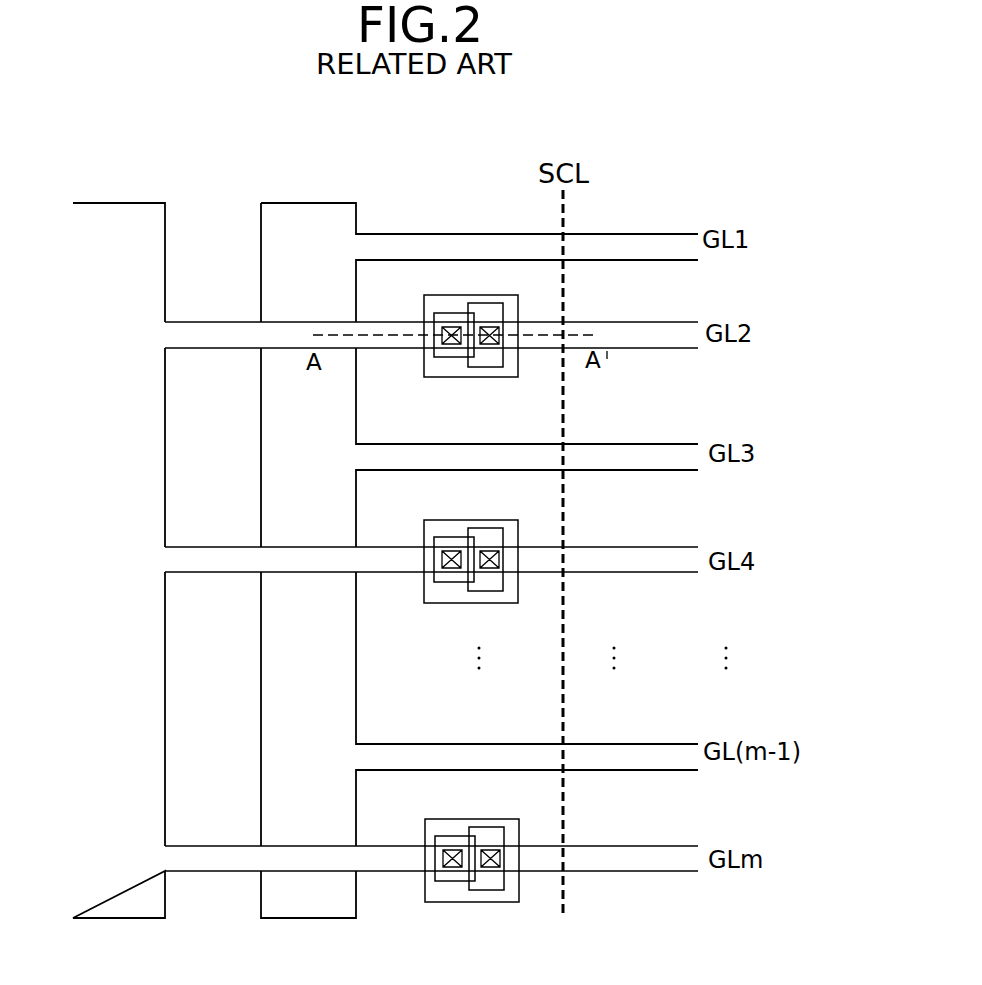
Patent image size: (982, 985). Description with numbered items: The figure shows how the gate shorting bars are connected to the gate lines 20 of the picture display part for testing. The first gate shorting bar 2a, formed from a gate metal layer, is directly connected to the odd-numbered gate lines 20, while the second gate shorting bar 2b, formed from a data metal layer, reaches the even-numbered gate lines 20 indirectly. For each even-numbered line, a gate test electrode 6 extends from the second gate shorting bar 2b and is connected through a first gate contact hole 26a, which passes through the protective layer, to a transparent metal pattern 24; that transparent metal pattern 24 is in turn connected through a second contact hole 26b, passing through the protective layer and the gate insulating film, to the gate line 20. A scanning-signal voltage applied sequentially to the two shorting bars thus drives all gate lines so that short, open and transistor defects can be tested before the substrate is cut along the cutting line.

The first gate shorting bar 2a is at (276, 202).
The second gate shorting bar 2b is at (92, 202).
The gate test electrode 6 is at (406, 321).
The gate line 20 is at (596, 322).
The transparent metal pattern 24 is at (495, 380).
The first gate contact hole 26a is at (448, 326).
The second contact hole 26b is at (485, 326).